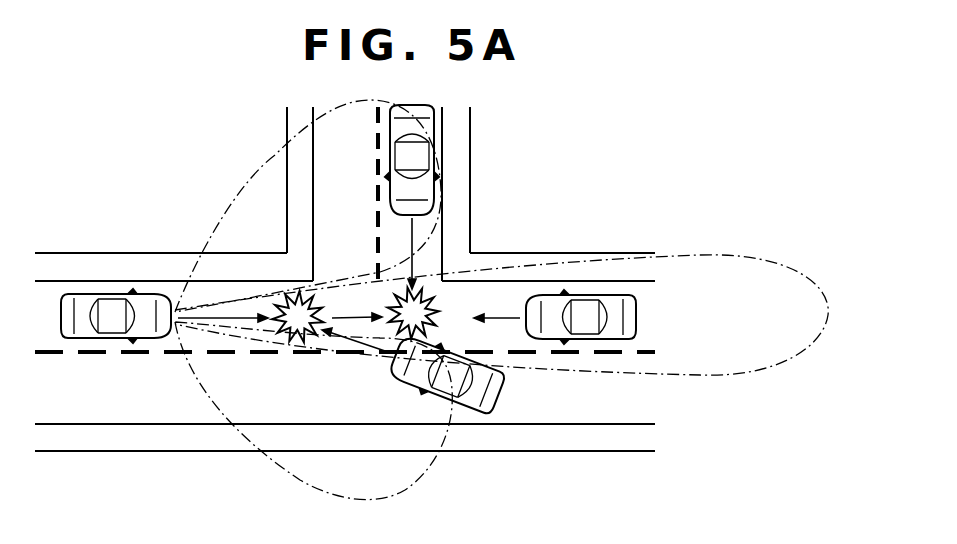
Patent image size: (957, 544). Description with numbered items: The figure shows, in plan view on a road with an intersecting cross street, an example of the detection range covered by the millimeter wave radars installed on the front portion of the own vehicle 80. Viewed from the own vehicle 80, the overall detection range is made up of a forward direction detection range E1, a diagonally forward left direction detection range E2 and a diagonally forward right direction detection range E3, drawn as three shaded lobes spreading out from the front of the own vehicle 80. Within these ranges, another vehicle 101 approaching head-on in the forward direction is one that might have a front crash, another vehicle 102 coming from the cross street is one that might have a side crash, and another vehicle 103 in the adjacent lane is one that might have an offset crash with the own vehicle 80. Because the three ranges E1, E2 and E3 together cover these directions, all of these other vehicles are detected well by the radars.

The own vehicle 80 is at (106, 295).
The another vehicle 101 is at (597, 296).
The another vehicle 102 is at (432, 147).
The another vehicle 103 is at (505, 380).
The forward direction detection range E1 is at (745, 376).
The diagonally forward left direction detection range E2 is at (268, 163).
The diagonally forward right direction detection range E3 is at (428, 467).